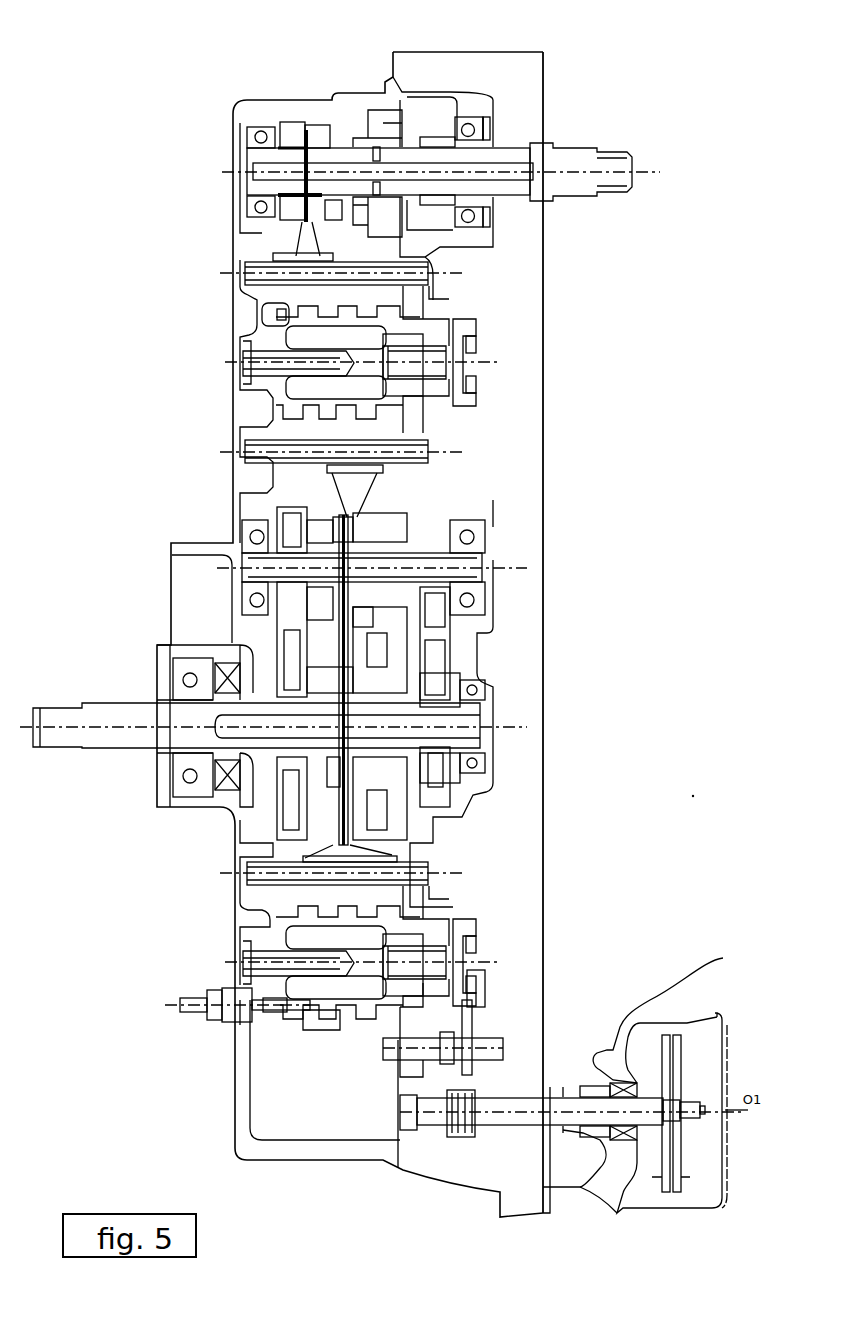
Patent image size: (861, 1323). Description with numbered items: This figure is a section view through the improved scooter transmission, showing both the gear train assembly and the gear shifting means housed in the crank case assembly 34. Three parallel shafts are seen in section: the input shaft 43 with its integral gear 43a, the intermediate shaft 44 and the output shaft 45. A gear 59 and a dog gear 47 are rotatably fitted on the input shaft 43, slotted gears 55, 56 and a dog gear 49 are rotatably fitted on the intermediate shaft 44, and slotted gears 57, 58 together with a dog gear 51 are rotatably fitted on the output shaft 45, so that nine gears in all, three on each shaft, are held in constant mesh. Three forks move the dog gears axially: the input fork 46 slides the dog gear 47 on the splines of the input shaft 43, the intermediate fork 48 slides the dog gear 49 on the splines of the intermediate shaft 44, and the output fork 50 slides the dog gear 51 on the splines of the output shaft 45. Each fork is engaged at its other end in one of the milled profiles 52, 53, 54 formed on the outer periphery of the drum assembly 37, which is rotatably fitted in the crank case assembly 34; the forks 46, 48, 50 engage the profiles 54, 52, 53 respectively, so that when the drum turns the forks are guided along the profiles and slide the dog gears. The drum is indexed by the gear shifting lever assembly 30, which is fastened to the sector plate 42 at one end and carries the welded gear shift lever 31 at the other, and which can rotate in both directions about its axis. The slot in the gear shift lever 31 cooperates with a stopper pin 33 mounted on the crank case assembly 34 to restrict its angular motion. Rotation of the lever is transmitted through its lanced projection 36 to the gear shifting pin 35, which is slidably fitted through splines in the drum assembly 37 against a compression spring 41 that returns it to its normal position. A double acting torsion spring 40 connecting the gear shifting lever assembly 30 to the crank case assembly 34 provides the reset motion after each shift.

The gear shifting lever assembly 30 is at (648, 1118).
The gear shift lever 31 is at (480, 988).
The stopper pin 33 is at (410, 1050).
The crank case assembly 34 is at (423, 93).
The gear shifting pin 35 is at (477, 395).
The lanced projection 36 is at (470, 1008).
The drum assembly 37 is at (280, 924).
The torsion spring 40 is at (452, 1135).
The compression spring 41 is at (318, 1030).
The sector plate 42 is at (672, 1170).
The input shaft 43 is at (578, 152).
The integral gear 43a is at (443, 138).
The intermediate shaft 44 is at (470, 553).
The output shaft 45 is at (110, 714).
The input fork 46 is at (250, 235).
The dog gear 47 is at (293, 135).
The intermediate fork 48 is at (415, 470).
The dog gear 49 is at (385, 531).
The output fork 50 is at (310, 892).
The dog gear 51 is at (400, 678).
The milled profile 52 is at (420, 308).
The milled profile 53 is at (317, 318).
The milled profile 54 is at (262, 308).
The slotted gear 55 is at (433, 633).
The slotted gear 56 is at (293, 506).
The slotted gear 57 is at (437, 795).
The slotted gear 58 is at (290, 813).
The gear 59 is at (379, 118).